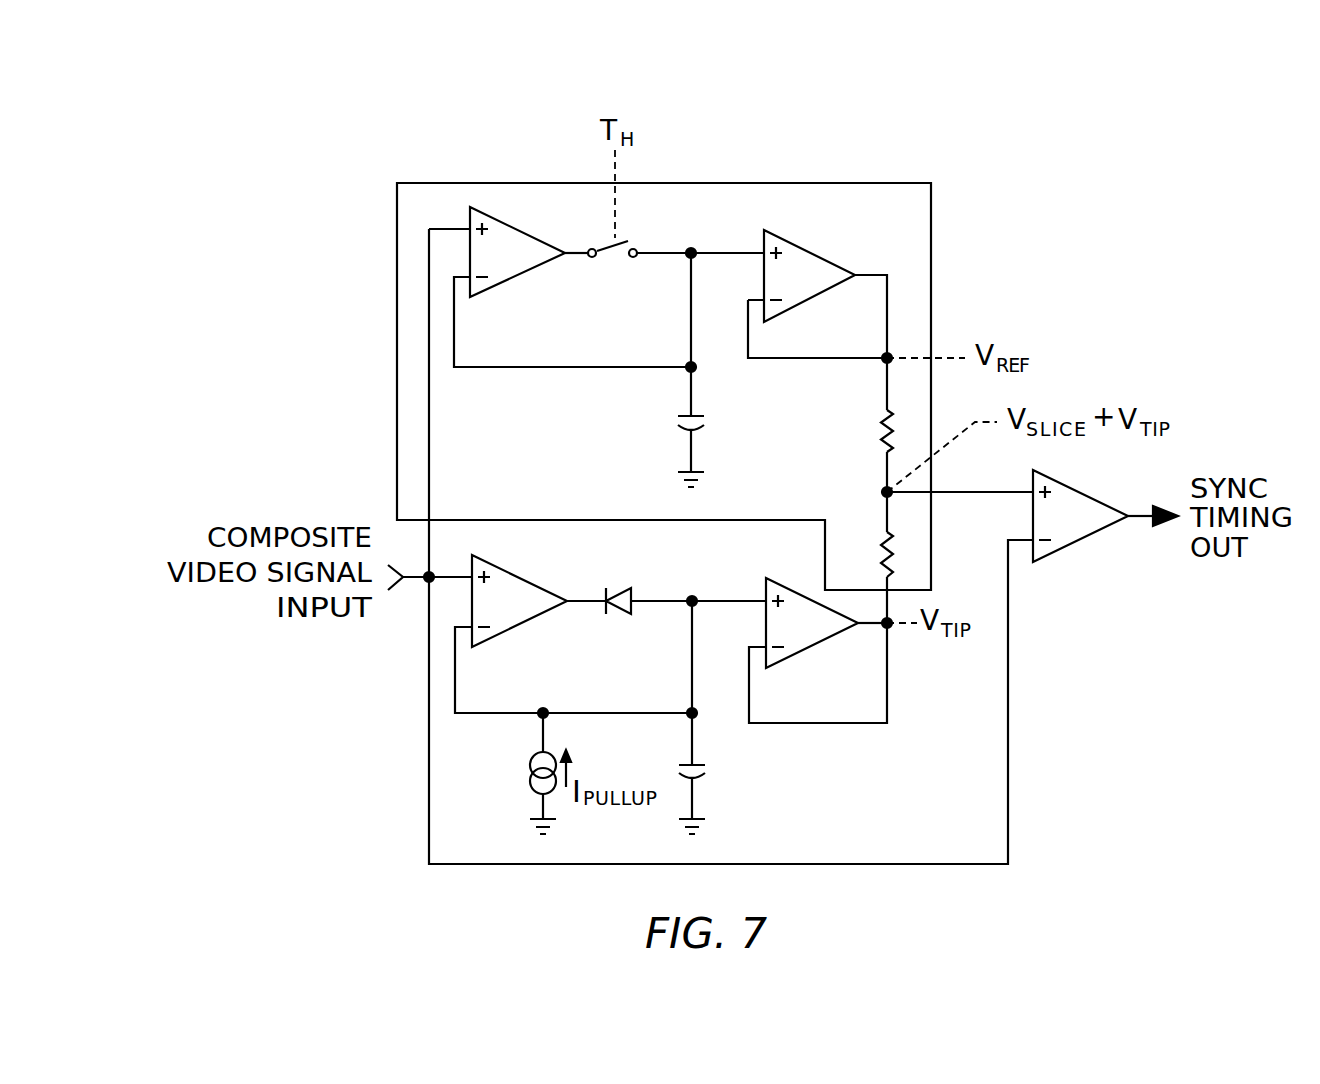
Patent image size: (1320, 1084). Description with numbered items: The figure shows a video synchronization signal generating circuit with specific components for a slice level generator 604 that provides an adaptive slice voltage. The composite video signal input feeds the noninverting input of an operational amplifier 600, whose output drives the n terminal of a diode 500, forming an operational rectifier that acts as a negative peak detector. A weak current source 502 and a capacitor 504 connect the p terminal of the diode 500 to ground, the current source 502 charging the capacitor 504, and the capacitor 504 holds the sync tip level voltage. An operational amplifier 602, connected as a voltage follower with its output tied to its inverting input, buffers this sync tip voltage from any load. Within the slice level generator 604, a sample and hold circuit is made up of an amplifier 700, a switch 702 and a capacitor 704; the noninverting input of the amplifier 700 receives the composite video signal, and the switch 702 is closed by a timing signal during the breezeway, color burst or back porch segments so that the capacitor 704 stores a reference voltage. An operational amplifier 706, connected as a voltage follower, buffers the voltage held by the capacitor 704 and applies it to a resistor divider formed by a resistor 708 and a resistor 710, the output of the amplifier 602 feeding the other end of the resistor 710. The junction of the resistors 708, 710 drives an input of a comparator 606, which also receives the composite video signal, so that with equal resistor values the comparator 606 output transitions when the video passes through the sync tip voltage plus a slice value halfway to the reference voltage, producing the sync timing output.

The diode 500 is at (617, 614).
The current source 502 is at (530, 785).
The capacitor 504 is at (702, 762).
The operational amplifier 600 is at (523, 573).
The operational amplifier 602 is at (802, 655).
The slice level generator 604 is at (931, 205).
The comparator 606 is at (1080, 540).
The amplifier 700 is at (518, 225).
The switch 702 is at (613, 243).
The capacitor 704 is at (685, 413).
The operational amplifier 706 is at (812, 252).
The resistor 708 is at (880, 413).
The resistor 710 is at (892, 553).